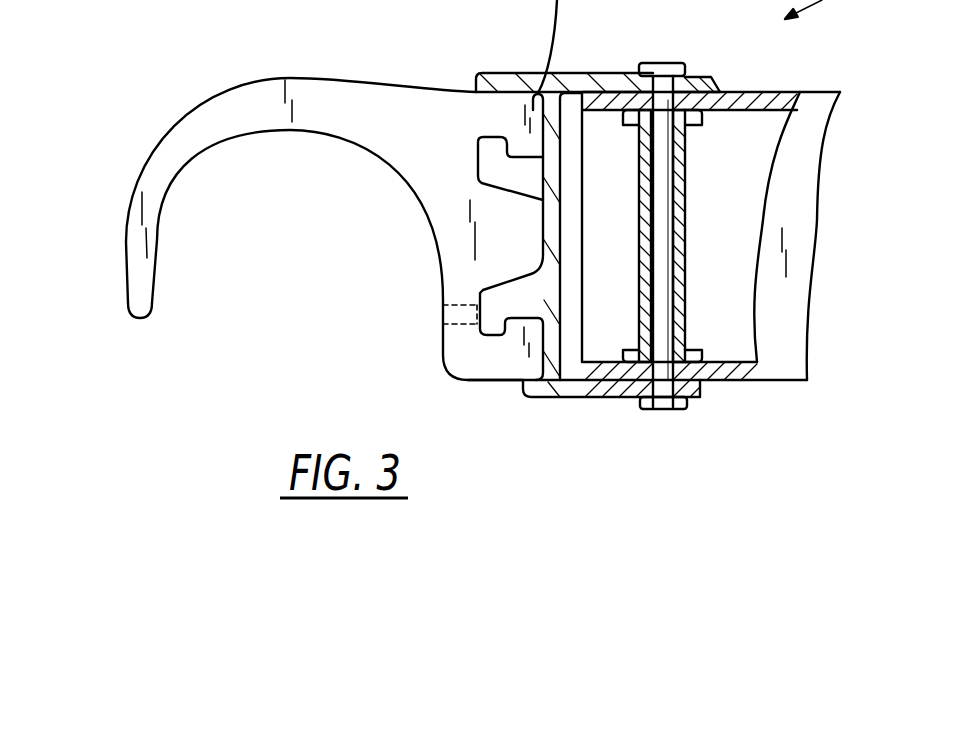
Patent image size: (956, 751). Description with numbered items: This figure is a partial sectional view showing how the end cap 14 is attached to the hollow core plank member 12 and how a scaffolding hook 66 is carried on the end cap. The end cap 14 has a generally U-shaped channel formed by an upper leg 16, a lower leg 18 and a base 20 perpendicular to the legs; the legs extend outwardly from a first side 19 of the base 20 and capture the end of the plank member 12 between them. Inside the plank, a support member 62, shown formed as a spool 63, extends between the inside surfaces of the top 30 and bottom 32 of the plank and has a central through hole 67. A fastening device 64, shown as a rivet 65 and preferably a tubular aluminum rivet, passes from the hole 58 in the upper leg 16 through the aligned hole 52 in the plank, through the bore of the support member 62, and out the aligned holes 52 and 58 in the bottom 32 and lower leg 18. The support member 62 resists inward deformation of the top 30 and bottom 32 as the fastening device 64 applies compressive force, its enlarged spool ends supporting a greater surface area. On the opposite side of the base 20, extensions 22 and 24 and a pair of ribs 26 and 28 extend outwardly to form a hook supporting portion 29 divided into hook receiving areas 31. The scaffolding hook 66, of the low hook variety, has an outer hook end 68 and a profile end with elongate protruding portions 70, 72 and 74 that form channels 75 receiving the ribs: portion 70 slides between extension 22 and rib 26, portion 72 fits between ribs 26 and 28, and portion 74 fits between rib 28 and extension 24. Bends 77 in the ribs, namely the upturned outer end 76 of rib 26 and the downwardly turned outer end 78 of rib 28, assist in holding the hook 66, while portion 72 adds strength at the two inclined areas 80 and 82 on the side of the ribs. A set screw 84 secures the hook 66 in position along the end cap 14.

The plank member 12 is at (793, 92).
The end cap 14 is at (570, 70).
The upper leg 16 is at (596, 76).
The lower leg 18 is at (590, 398).
The first side 19 is at (558, 133).
The base 20 is at (552, 381).
The extension 22 is at (507, 74).
The extension 24 is at (527, 397).
The rib 26 is at (468, 166).
The rib 28 is at (479, 289).
The hook supporting portion 29 is at (470, 135).
The top 30 is at (760, 91).
The hook receiving areas 31 is at (476, 215).
The bottom 32 is at (733, 381).
The hole 52 is at (688, 110).
The hole 58 is at (696, 78).
The support member 62 is at (693, 220).
The spool 63 is at (688, 256).
The fastening device 64 is at (674, 62).
The rivet 65 is at (671, 410).
The scaffolding hook 66 is at (216, 80).
The through hole 67 is at (677, 166).
The outer hook end 68 is at (127, 277).
The protruding portion 70 is at (509, 120).
The protruding portion 72 is at (492, 255).
The protruding portion 74 is at (484, 375).
The channels 75 is at (481, 293).
The upturned outer end 76 is at (550, 141).
The bends 77 is at (492, 173).
The downwardly turned outer end 78 is at (488, 337).
The inclined area 80 is at (526, 189).
The inclined area 82 is at (530, 283).
The set screw 84 is at (462, 325).